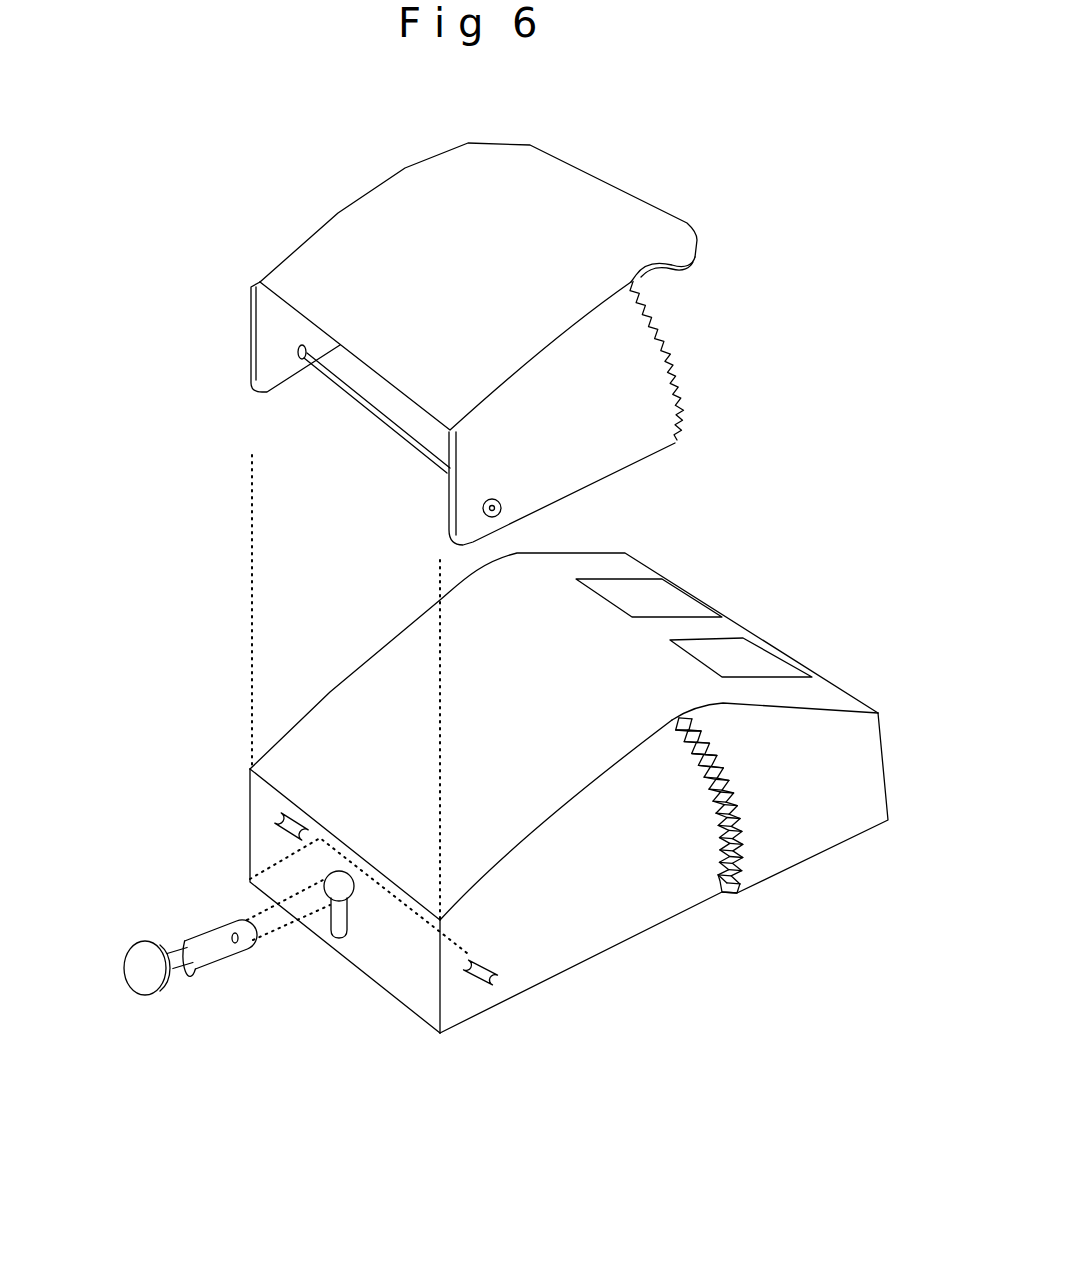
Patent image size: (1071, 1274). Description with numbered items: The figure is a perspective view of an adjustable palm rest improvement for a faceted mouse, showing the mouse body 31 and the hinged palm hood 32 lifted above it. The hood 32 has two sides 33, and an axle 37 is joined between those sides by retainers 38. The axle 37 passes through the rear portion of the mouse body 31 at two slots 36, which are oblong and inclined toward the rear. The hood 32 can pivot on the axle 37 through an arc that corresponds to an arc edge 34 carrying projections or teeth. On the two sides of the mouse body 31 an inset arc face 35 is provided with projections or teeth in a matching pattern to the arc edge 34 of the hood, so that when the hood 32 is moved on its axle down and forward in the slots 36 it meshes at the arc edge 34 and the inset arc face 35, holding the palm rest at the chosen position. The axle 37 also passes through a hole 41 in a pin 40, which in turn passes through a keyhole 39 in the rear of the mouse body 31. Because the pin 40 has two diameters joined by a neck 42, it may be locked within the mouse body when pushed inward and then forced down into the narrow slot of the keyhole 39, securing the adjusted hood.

The mouse body 31 is at (789, 599).
The hinged palm hood 32 is at (602, 167).
The sides 33 is at (280, 322).
The arc edge 34 is at (673, 340).
The inset arc face 35 is at (708, 844).
The slots 36 is at (282, 827).
The axle 37 is at (420, 457).
The retainers 38 is at (503, 513).
The keyhole 39 is at (345, 892).
The pin 40 is at (153, 1000).
The hole 41 is at (238, 948).
The neck 42 is at (173, 944).